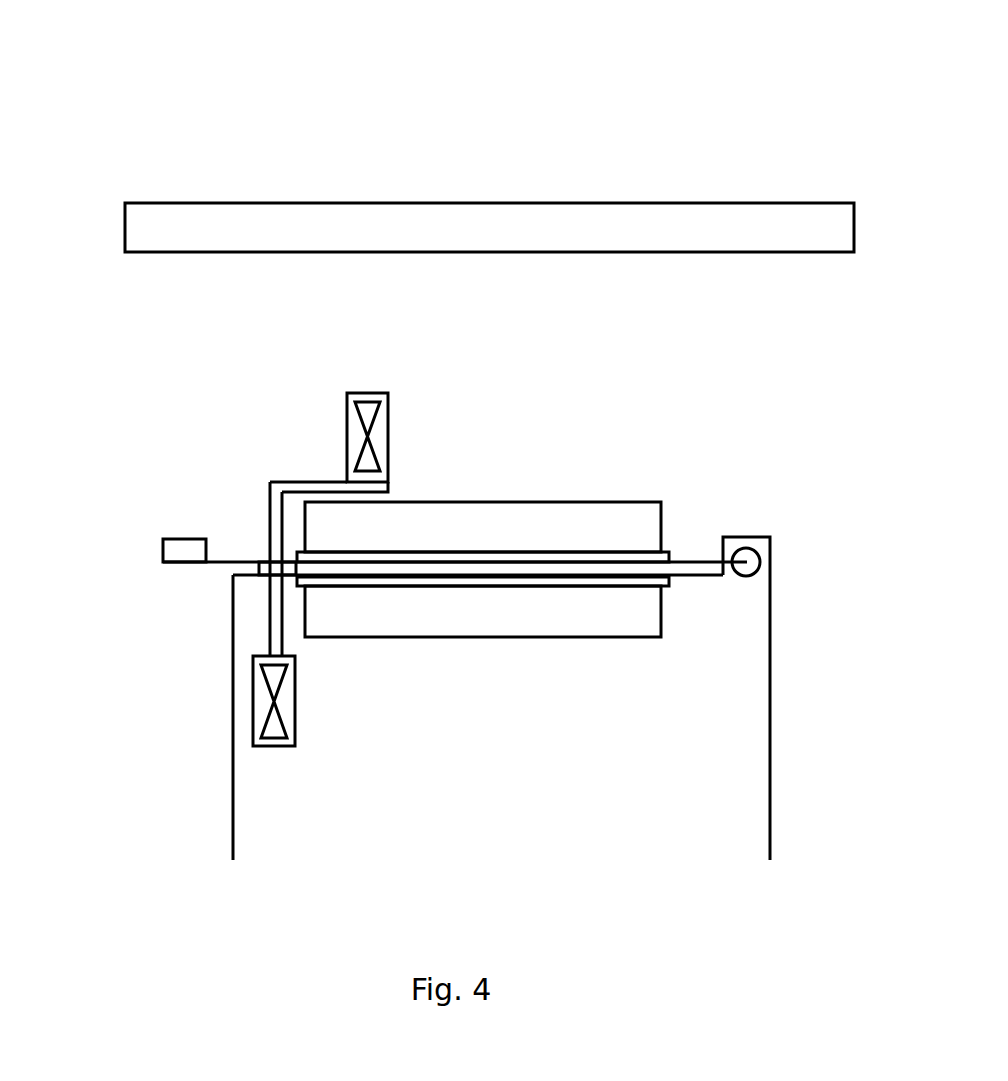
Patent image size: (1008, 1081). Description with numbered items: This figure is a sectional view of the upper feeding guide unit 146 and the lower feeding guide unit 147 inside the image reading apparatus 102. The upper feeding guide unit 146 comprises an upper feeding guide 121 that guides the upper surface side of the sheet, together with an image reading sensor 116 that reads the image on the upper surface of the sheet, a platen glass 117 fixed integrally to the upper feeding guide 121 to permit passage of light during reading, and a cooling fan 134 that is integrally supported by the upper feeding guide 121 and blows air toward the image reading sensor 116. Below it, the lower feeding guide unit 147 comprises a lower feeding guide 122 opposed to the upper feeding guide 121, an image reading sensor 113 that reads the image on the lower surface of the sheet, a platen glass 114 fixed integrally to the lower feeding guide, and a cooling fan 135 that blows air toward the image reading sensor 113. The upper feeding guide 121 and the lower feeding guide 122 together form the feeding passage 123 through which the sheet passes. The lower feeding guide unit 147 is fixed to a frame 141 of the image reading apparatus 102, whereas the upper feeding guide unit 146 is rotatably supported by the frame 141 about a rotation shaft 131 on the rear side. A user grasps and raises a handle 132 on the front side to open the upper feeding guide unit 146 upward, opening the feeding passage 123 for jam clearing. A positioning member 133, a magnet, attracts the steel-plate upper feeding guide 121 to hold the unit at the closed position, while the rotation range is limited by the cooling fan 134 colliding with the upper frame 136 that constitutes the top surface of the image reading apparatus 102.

The image reading apparatus 102 is at (536, 123).
The upper frame 136 is at (355, 202).
The cooling fan 134 is at (357, 433).
The cooling fan 135 is at (263, 699).
The image reading sensor 116 is at (469, 502).
The platen glass 117 is at (588, 552).
The feeding passage 123 is at (242, 567).
The positioning member 133 is at (265, 572).
The handle 132 is at (181, 547).
The platen glass 114 is at (588, 586).
The image reading sensor 113 is at (467, 620).
The frame 141 is at (770, 688).
The rotation shaft 131 is at (760, 562).
The upper feeding guide 121 is at (697, 562).
The lower feeding guide 122 is at (697, 577).
The upper feeding guide unit 146 is at (633, 470).
The lower feeding guide unit 147 is at (633, 656).